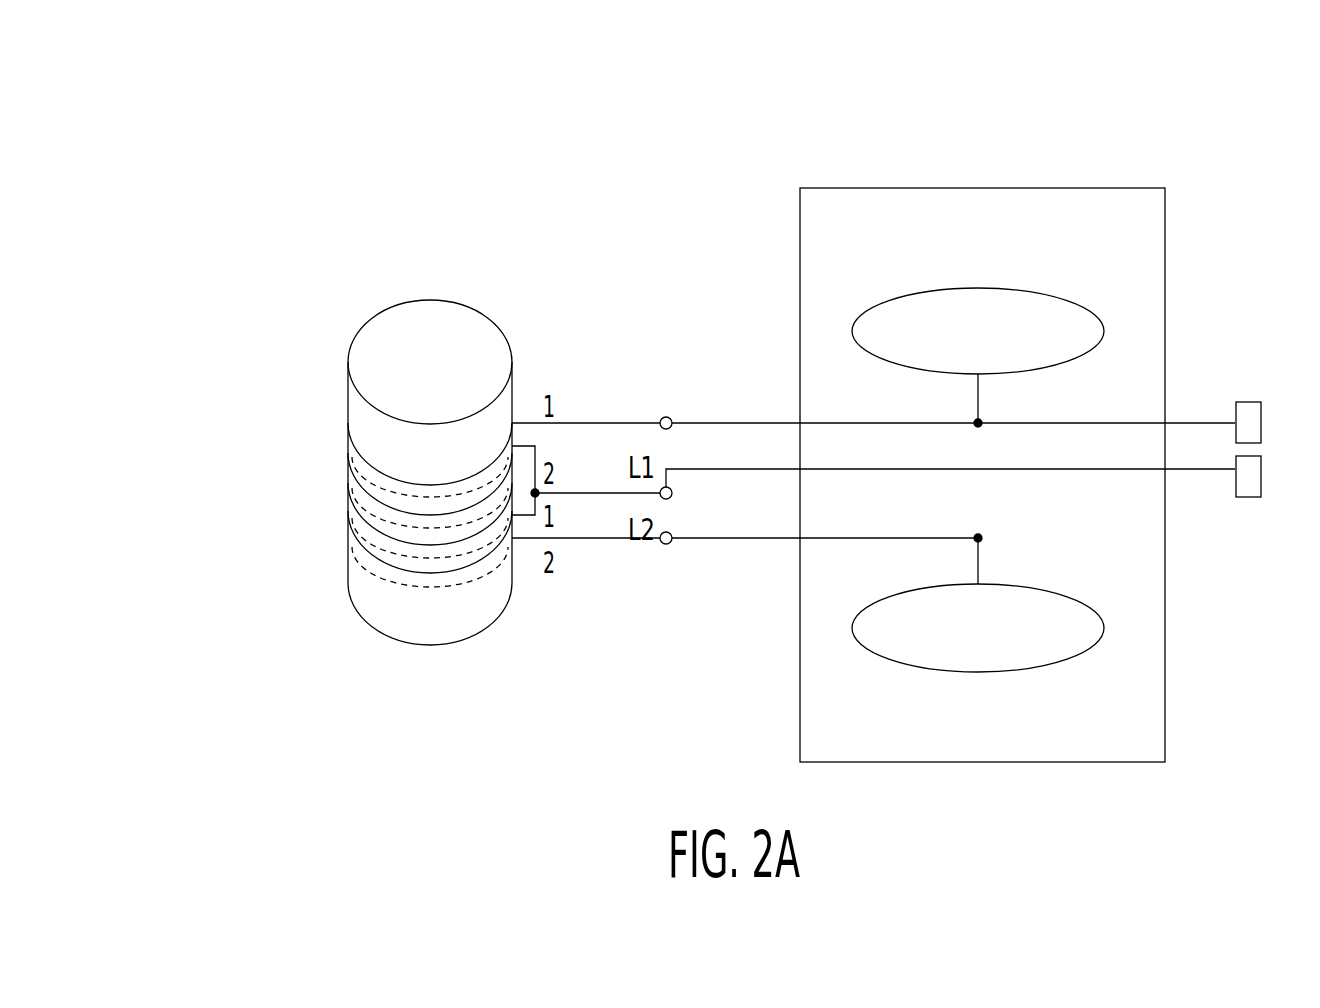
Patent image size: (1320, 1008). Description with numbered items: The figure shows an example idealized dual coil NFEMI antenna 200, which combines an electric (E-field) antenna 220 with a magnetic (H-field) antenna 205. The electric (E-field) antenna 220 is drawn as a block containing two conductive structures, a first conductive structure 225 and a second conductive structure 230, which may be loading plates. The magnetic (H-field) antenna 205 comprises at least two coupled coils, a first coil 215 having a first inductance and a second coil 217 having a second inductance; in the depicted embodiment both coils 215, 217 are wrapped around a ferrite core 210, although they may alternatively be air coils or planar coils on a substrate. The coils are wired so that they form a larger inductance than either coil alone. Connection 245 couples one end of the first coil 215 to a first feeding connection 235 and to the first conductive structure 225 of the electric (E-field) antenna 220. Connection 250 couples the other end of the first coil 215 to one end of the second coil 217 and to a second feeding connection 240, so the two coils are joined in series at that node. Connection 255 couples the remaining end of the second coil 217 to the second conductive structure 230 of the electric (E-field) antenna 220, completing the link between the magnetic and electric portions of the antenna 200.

The dual coil NFEMI antenna 200 is at (220, 126).
The magnetic (H-field) antenna 205 is at (408, 248).
The ferrite core 210 is at (362, 328).
The first coil 215 is at (367, 467).
The second coil 217 is at (367, 556).
The electric (E-field) antenna 220 is at (1167, 210).
The first conductive structure 225 is at (1073, 300).
The second conductive structure 230 is at (1058, 663).
The first feeding connection 235 is at (1250, 400).
The second feeding connection 240 is at (1243, 498).
The connection 245 is at (666, 417).
The connection 250 is at (672, 494).
The connection 255 is at (665, 545).